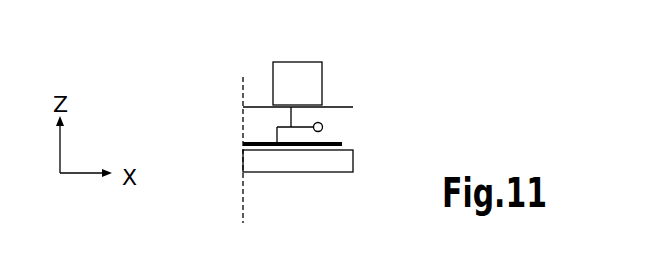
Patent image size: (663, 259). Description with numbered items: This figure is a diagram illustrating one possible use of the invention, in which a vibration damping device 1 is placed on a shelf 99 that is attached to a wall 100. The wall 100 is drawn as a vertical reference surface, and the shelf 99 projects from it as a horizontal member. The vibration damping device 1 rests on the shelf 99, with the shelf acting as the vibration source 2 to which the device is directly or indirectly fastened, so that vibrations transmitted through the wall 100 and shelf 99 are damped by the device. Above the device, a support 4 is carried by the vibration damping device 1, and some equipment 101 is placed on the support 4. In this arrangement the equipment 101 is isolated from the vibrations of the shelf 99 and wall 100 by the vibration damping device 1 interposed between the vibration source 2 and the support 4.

The vibration damping device 1 is at (398, 125).
The vibration source 2 is at (342, 144).
The support 4 is at (352, 107).
The shelf 99 is at (285, 168).
The wall 100 is at (243, 205).
The equipment 101 is at (322, 80).